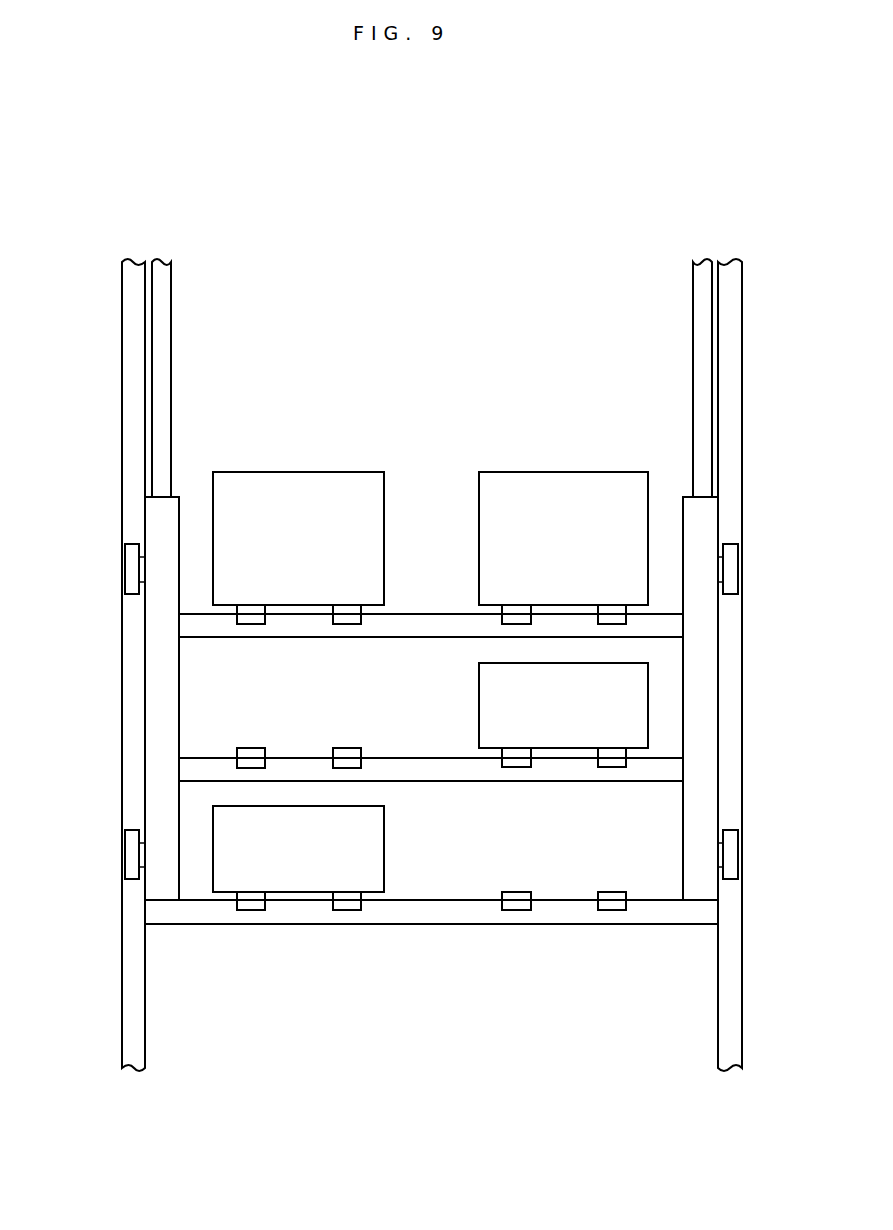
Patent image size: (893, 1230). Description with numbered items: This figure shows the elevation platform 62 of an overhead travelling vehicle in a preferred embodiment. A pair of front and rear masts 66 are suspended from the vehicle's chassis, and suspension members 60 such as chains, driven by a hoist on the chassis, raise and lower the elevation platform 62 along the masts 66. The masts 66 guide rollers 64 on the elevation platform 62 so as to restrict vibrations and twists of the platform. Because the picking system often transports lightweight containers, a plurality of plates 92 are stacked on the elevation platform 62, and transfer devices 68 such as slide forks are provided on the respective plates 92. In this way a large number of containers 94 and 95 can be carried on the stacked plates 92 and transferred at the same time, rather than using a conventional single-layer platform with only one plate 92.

The suspension member 60 is at (163, 372).
The elevation platform 62 is at (446, 1078).
The roller 64 is at (128, 567).
The mast 66 is at (127, 437).
The transfer device 68 is at (348, 622).
The plate 92 is at (407, 627).
The container 94 is at (490, 710).
The container 95 is at (490, 518).